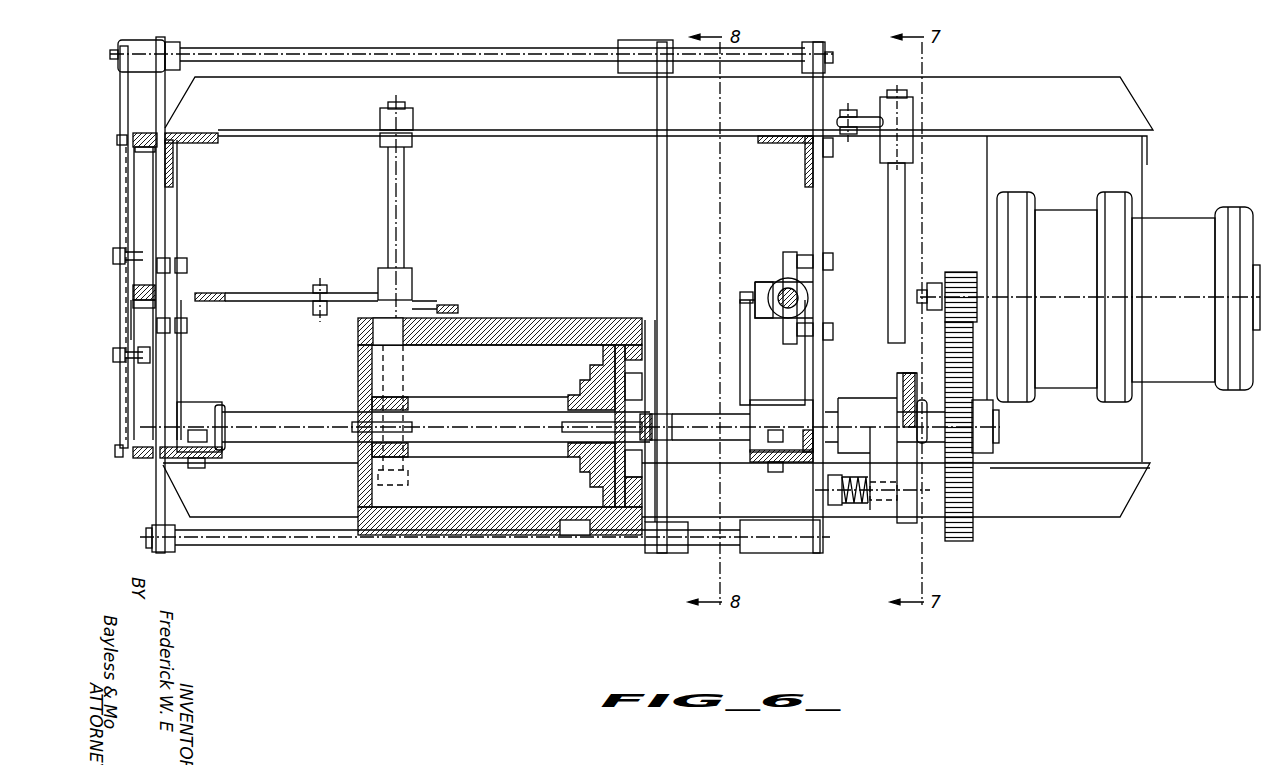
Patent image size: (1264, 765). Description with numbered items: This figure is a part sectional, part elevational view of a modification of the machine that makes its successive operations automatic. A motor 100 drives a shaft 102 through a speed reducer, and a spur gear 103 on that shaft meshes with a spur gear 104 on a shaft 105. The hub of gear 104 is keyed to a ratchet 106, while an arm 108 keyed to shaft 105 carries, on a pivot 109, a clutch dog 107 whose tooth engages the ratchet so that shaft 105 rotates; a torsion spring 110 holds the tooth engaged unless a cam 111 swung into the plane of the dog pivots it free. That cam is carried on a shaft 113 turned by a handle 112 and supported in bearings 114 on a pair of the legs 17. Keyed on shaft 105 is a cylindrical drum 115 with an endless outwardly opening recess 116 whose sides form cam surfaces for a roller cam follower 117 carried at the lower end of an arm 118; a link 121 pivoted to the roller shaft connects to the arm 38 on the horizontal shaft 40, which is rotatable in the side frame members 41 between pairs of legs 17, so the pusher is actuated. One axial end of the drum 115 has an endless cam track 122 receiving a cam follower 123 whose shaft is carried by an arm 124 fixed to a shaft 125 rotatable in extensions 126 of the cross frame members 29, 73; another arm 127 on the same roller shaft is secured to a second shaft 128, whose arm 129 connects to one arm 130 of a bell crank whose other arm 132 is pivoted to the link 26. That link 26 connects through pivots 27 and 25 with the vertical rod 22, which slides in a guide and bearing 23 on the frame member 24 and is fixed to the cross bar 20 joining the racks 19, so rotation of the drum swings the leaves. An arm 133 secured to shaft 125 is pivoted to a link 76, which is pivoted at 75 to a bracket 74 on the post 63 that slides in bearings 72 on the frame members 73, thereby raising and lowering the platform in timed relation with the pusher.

The legs 17 is at (210, 133).
The vertical racks 19 is at (143, 133).
The cross bar 20 is at (130, 400).
The vertical rod 22 is at (133, 292).
The guide and bearing 23 is at (187, 268).
The frame member 24 is at (177, 197).
The pivot 25 is at (155, 305).
The link 26 is at (172, 335).
The pivot 27 is at (118, 358).
The frame member 29 is at (170, 173).
The arm 38 is at (262, 292).
The horizontal shaft 40 is at (405, 195).
The side frame members 41 is at (267, 520).
The post 63 is at (800, 296).
The bearings 72 is at (815, 314).
The frame members 73 is at (823, 212).
The bracket 74 is at (789, 254).
The pivot 75 is at (775, 286).
The link 76 is at (745, 296).
The motor 100 is at (1170, 215).
The shaft 102 is at (930, 285).
The spur gear 103 is at (955, 272).
The spur gear 104 is at (970, 485).
The shaft 105 is at (288, 412).
The ratchet 106 is at (897, 368).
The clutch dog 107 is at (905, 522).
The arm 108 is at (878, 400).
The pivot 109 is at (828, 490).
The torsion spring 110 is at (855, 505).
The cam 111 is at (912, 372).
The handle 112 is at (858, 117).
The shaft 113 is at (905, 183).
The bearings 114 is at (845, 135).
The cylindrical drum 115 is at (548, 318).
The recess 116 is at (380, 345).
The cam follower 117 is at (375, 325).
The arm 118 is at (448, 305).
The link 121 is at (325, 292).
The cam track 122 is at (640, 378).
The cam follower 123 is at (650, 414).
The arm 124 is at (650, 492).
The shaft 125 is at (458, 535).
The extensions 126 is at (156, 500).
The arm 127 is at (657, 150).
The shaft 128 is at (466, 63).
The arm 129 is at (128, 93).
The bell crank arm 130 is at (135, 250).
The bell crank arm 132 is at (130, 323).
The arm 133 is at (745, 330).